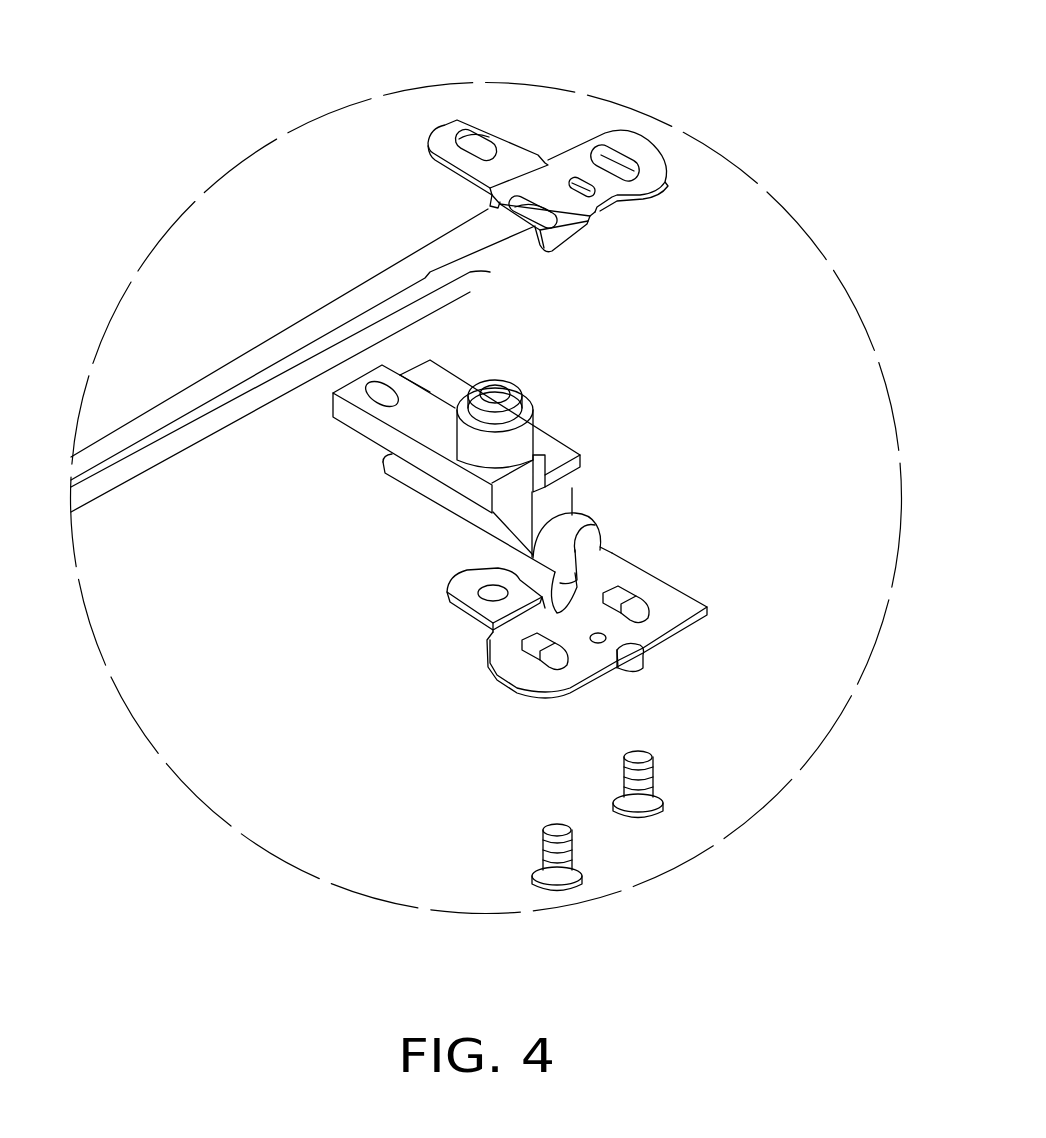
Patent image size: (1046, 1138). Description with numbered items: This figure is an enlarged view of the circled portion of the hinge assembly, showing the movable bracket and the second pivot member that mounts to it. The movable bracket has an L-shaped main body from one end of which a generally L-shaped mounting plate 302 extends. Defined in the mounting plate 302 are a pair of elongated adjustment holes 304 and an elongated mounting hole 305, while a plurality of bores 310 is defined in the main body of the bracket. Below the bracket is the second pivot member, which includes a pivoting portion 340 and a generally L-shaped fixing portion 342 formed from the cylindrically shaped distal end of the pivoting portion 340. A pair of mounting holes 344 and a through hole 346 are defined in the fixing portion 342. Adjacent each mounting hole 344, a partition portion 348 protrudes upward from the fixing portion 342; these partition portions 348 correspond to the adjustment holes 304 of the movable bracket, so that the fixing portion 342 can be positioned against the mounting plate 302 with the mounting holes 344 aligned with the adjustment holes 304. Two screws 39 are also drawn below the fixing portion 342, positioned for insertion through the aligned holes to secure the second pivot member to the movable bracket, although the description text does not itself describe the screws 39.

The mounting plate 302 is at (580, 150).
The adjustment holes 304 is at (543, 220).
The mounting hole 305 is at (478, 147).
The bores 310 is at (384, 313).
The pivoting portion 340 is at (513, 523).
The fixing portion 342 is at (677, 600).
The mounting holes 344 is at (627, 617).
The through hole 346 is at (487, 593).
The partition portion 348 is at (530, 645).
The screws 39 is at (643, 797).